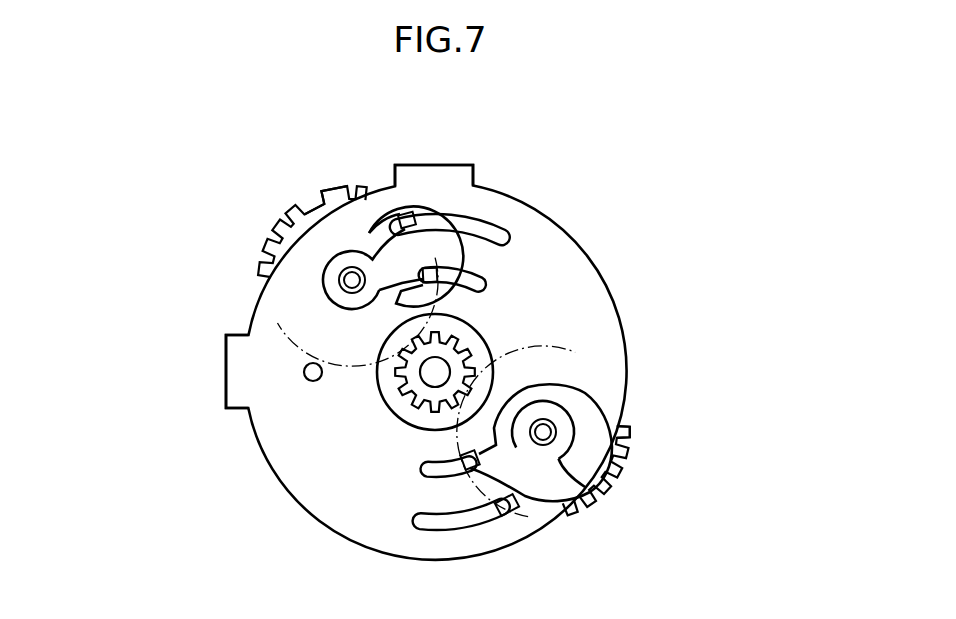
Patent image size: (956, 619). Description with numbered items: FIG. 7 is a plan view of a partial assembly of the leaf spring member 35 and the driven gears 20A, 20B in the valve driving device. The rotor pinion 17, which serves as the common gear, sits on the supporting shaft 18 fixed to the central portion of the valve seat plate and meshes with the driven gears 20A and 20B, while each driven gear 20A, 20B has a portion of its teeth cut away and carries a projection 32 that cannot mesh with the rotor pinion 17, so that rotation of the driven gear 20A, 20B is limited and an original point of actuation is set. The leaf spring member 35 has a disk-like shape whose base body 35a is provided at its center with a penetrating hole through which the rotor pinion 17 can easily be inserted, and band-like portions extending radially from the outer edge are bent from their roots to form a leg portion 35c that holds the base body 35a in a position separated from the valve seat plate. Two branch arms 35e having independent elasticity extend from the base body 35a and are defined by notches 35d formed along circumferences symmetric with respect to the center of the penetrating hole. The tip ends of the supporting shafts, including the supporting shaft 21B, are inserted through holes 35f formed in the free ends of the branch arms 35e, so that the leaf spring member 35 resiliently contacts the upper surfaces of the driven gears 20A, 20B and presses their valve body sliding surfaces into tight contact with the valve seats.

The rotor pinion 17 is at (460, 335).
The supporting shaft 18 is at (394, 412).
The driven gear 20A is at (338, 292).
The driven gear 20B is at (577, 350).
The supporting shaft 21B is at (590, 415).
The projection 32 is at (288, 210).
The leaf spring member 35 is at (528, 202).
The base body 35a is at (350, 452).
The leg portion 35c is at (435, 165).
The notches 35d is at (303, 269).
The branch arms 35e is at (463, 520).
The holes 35f is at (348, 290).